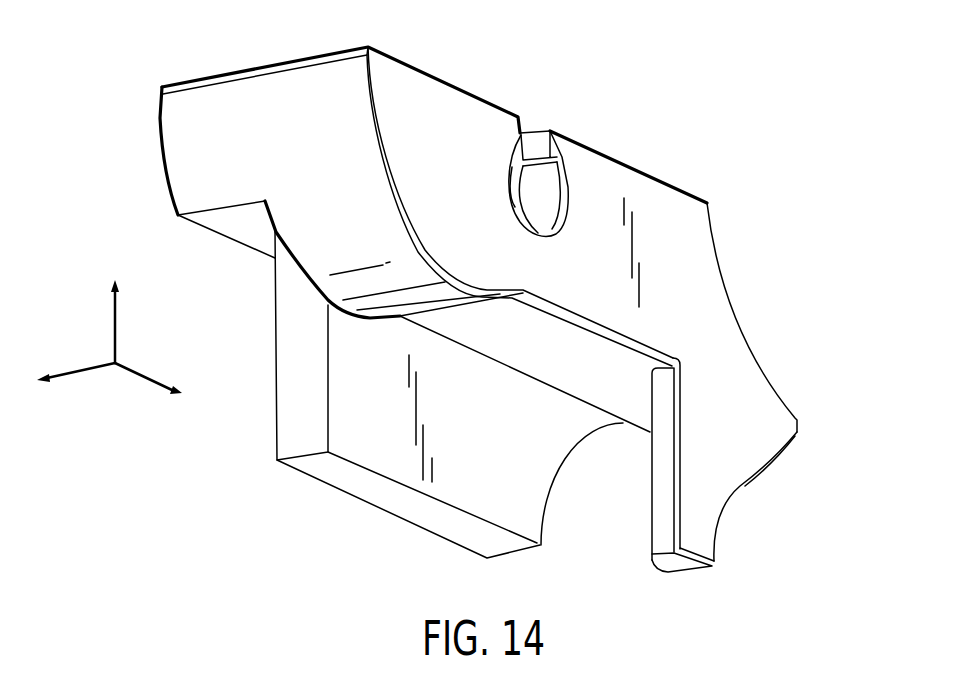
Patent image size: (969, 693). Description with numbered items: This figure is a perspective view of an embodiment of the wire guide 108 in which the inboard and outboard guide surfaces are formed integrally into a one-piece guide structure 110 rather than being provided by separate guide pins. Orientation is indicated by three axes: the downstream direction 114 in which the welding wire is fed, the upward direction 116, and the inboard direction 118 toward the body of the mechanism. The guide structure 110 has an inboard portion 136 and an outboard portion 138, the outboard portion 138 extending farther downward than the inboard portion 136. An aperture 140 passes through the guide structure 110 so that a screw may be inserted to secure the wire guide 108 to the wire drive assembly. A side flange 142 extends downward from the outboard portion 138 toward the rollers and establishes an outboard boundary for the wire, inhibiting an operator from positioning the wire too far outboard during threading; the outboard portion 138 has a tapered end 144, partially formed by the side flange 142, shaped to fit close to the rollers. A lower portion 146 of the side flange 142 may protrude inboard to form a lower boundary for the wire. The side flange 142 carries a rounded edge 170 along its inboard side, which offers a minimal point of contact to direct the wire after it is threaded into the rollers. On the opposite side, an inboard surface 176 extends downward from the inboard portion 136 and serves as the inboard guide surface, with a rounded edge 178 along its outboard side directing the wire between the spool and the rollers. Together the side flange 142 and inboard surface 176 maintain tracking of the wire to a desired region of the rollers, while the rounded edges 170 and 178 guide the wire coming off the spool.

The wire guide 108 is at (760, 160).
The guide structure 110 is at (475, 317).
The downstream direction axis 114 is at (140, 378).
The upward direction axis 116 is at (115, 327).
The inboard direction axis 118 is at (80, 368).
The inboard portion 136 is at (162, 153).
The outboard portion 138 is at (410, 88).
The aperture 140 is at (550, 193).
The side flange 142 is at (720, 500).
The tapered end 144 is at (798, 428).
The lower portion 146 is at (680, 575).
The rounded edge 170 is at (650, 490).
The inboard surface 176 is at (275, 345).
The rounded edge 178 is at (335, 437).